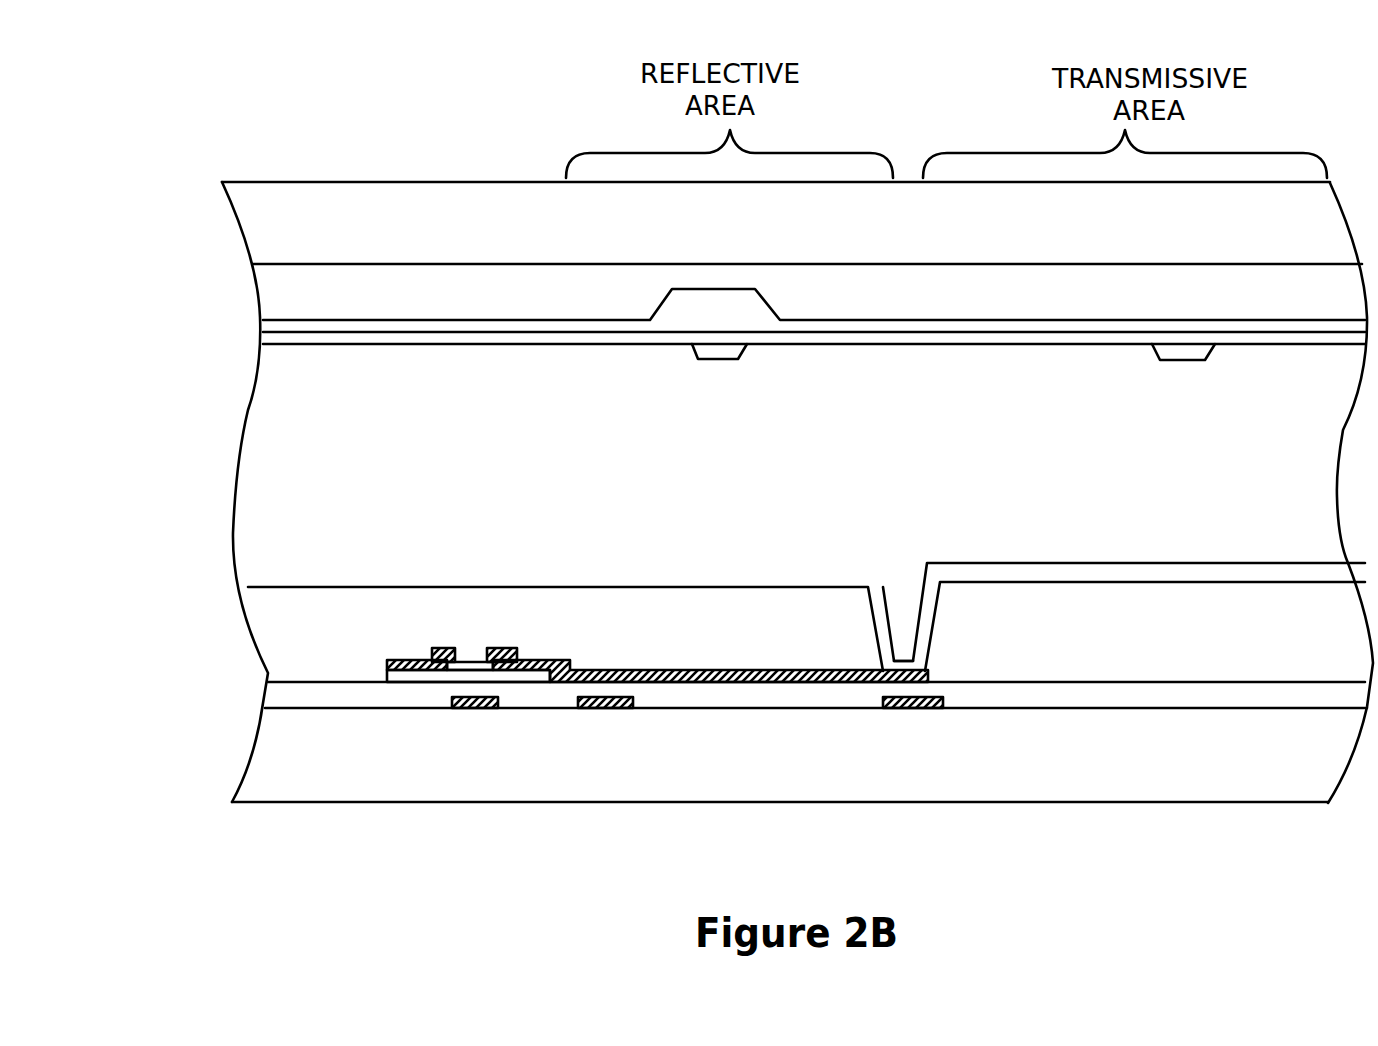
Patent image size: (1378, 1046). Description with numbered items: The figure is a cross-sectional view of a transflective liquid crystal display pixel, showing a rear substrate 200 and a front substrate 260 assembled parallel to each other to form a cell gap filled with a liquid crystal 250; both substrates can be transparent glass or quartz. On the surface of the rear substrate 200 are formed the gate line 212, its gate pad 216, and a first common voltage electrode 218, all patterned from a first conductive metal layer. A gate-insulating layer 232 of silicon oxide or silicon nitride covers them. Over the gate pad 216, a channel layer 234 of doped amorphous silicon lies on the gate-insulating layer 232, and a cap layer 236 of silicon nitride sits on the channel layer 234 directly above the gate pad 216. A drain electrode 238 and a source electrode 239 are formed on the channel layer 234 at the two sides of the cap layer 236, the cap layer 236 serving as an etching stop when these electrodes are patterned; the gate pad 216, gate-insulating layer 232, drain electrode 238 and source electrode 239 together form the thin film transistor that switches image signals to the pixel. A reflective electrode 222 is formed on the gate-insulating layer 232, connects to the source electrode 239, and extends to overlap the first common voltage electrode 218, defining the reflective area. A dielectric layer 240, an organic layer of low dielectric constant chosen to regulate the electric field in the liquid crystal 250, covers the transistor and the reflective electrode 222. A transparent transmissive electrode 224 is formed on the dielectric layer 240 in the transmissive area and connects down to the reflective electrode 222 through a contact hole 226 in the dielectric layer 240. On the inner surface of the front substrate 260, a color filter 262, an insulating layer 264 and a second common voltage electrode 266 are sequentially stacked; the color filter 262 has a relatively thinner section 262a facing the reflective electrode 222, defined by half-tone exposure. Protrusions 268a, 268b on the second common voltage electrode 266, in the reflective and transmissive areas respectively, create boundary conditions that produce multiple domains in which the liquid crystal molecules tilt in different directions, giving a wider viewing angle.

The rear substrate 200 is at (258, 748).
The gate line 212 is at (608, 708).
The gate pad 216 is at (475, 708).
The first common voltage electrode 218 is at (893, 708).
The reflective electrode 222 is at (772, 672).
The transmissive electrode 224 is at (1010, 562).
The contact hole 226 is at (903, 600).
The gate-insulating layer 232 is at (278, 694).
The channel layer 234 is at (413, 680).
The cap layer 236 is at (473, 660).
The drain electrode 238 is at (402, 663).
The source electrode 239 is at (508, 648).
The dielectric layer 240 is at (268, 630).
The liquid crystal 250 is at (248, 483).
The front substrate 260 is at (262, 217).
The color filter 262 is at (272, 280).
The section 262a is at (720, 277).
The insulating layer 264 is at (273, 325).
The second common voltage electrode 266 is at (263, 338).
The protrusion 268a is at (717, 359).
The protrusion 268b is at (1180, 360).